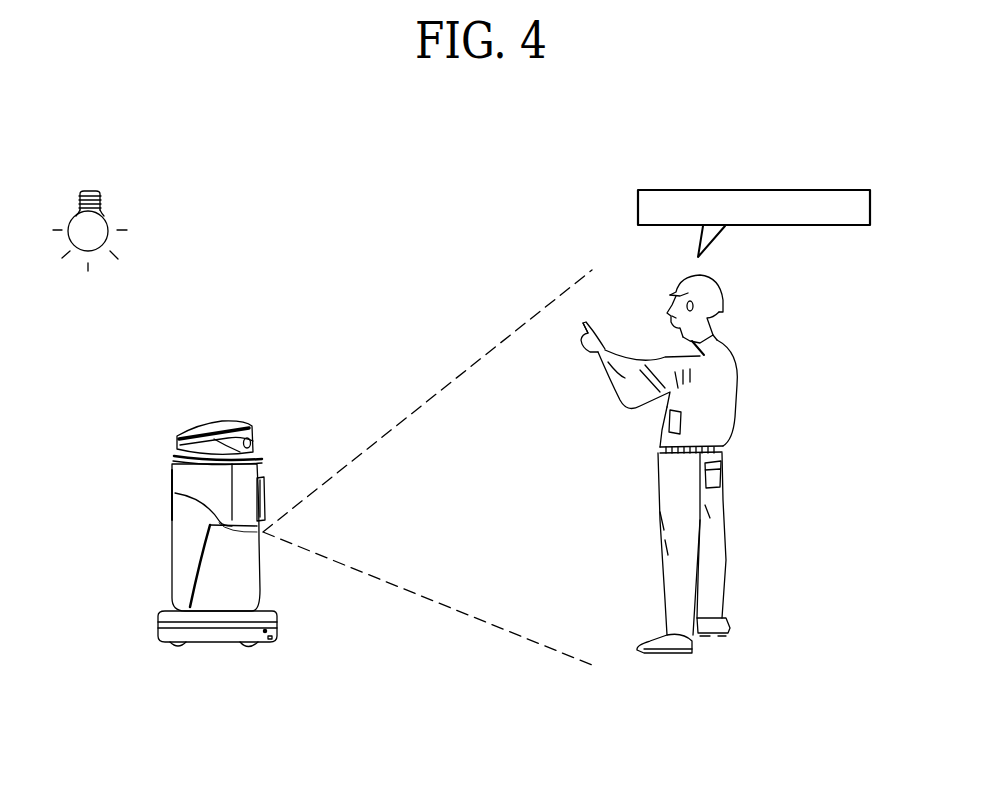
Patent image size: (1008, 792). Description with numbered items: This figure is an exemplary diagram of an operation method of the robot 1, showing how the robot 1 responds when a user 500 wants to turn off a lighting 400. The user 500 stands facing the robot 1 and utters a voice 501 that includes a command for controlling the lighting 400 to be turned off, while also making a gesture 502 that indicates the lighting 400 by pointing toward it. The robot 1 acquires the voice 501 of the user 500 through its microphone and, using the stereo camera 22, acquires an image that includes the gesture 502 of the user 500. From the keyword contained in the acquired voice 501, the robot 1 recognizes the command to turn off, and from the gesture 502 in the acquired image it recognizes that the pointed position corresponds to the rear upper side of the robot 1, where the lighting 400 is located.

The robot 1 is at (177, 563).
The stereo camera 22 is at (172, 495).
The lighting 400 is at (90, 191).
The user 500 is at (672, 568).
The voice 501 is at (757, 189).
The gesture 502 is at (585, 322).